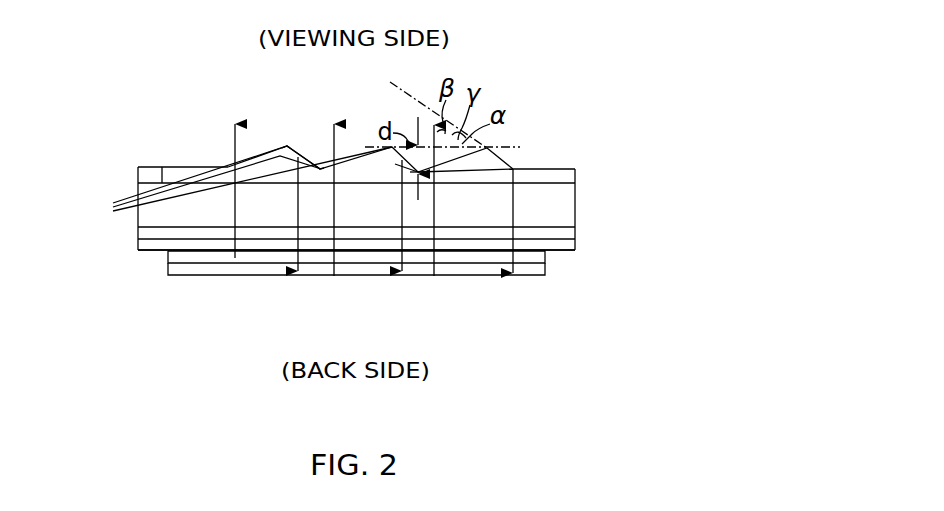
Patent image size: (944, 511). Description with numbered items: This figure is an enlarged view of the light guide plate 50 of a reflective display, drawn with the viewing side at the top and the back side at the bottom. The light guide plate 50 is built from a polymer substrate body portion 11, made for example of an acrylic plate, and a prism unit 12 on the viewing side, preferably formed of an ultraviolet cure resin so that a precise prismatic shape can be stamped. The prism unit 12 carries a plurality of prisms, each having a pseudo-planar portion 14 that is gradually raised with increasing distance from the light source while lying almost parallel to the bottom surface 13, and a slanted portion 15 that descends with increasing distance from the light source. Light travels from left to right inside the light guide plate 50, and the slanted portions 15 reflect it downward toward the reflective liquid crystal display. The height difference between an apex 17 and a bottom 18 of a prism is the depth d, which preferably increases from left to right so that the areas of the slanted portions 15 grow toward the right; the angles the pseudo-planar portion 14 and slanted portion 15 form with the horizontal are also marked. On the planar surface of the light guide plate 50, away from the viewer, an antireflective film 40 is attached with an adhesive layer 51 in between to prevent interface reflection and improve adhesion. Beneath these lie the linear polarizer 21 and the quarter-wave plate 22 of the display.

The light guide plate 50 is at (68, 142).
The polymer substrate body portion 11 is at (137, 190).
The prism unit 12 is at (137, 173).
The bottom surface 13 is at (161, 171).
The pseudo-planar portion 14 is at (227, 167).
The slanted portion 15 is at (301, 155).
The apex 17 is at (286, 146).
The bottom 18 is at (320, 167).
The adhesive layer 51 is at (574, 231).
The antireflective film 40 is at (574, 246).
The linear polarizer 21 is at (538, 258).
The λ/4 plate 22 is at (538, 270).